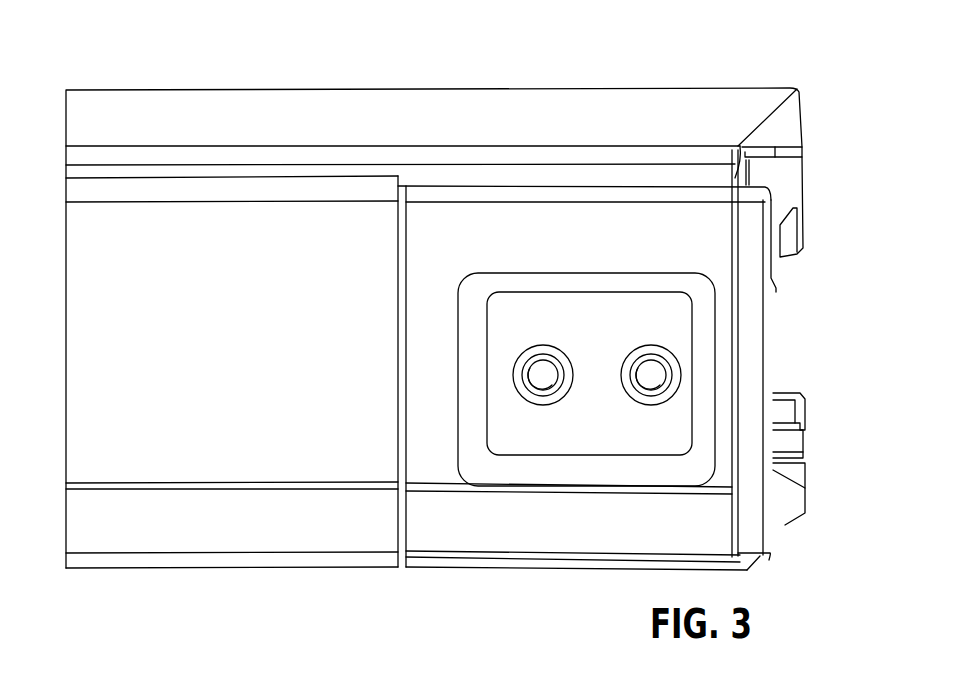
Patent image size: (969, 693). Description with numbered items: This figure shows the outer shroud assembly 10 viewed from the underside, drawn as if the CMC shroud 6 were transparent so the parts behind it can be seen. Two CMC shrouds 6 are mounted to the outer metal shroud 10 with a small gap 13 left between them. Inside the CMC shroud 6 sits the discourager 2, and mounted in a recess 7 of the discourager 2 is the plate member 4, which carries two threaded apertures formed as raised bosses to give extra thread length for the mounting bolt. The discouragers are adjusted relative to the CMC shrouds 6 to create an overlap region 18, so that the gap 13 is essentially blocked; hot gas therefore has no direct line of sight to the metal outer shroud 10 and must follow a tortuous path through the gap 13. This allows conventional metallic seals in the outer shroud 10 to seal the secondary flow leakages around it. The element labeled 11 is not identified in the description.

The outer shroud assembly 10 is at (729, 106).
The CMC shroud 6 is at (133, 495).
The gap 13 is at (404, 568).
The recess 7 is at (703, 295).
The overlap region 18 is at (461, 499).
The socket 11 is at (650, 375).
The plate member 4 is at (670, 405).
The discourager 2 is at (768, 494).